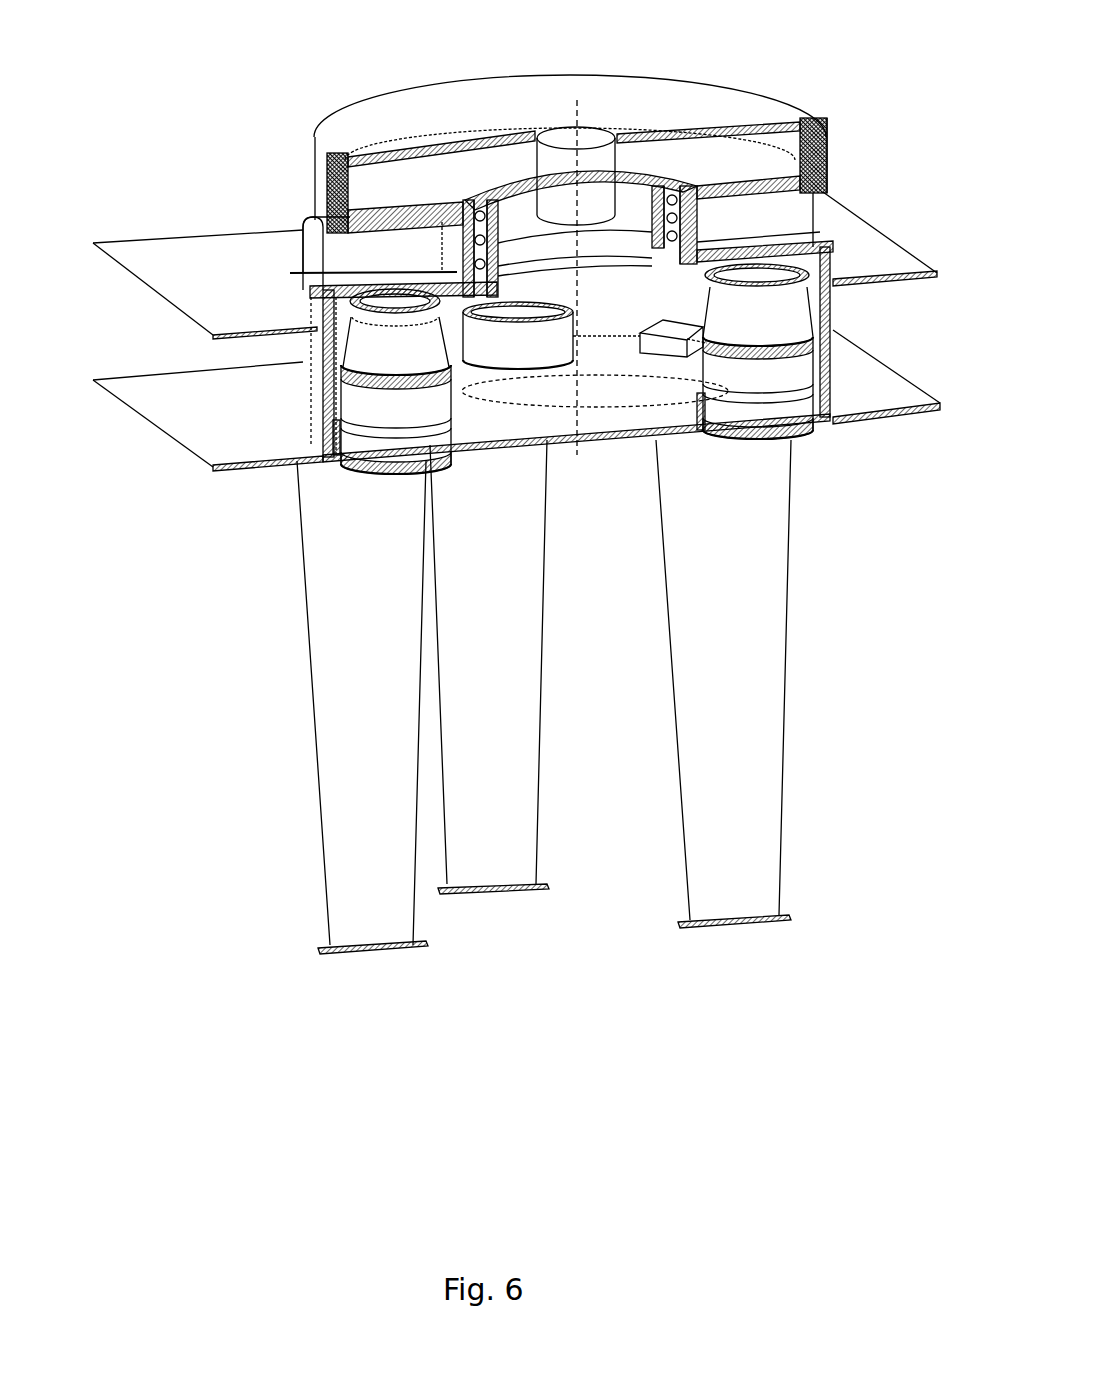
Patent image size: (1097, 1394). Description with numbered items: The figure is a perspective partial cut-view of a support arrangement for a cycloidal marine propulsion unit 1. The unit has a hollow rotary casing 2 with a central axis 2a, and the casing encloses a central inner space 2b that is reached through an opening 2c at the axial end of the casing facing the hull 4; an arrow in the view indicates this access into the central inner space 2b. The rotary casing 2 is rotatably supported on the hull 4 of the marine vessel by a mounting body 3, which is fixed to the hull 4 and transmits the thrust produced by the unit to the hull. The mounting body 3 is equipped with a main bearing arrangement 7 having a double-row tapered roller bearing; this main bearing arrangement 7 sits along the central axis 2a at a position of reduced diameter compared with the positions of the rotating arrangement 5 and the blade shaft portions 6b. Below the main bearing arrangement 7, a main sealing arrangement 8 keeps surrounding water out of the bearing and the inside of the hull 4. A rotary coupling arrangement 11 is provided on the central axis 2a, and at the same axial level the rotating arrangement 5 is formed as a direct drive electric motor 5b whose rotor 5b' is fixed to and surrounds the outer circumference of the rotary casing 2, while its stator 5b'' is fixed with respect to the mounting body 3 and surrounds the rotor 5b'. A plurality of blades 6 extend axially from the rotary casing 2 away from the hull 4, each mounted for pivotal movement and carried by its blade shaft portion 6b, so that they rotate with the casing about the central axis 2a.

The cycloidal marine propulsion unit 1 is at (500, 533).
The rotary casing 2 is at (838, 318).
The central axis 2a is at (578, 112).
The central inner space 2b is at (604, 362).
The opening 2c is at (524, 216).
The mounting body 3 is at (403, 234).
The hull 4 is at (185, 432).
The rotating arrangement 5 is at (316, 177).
The direct drive electric motor 5b is at (337, 193).
The rotor 5b' is at (801, 100).
The stator 5b'' is at (858, 101).
The blades 6 is at (386, 877).
The blade shaft portions 6b is at (414, 368).
The main bearing arrangement 7 is at (690, 218).
The main sealing arrangement 8 is at (305, 276).
The rotary coupling arrangement 11 is at (560, 132).